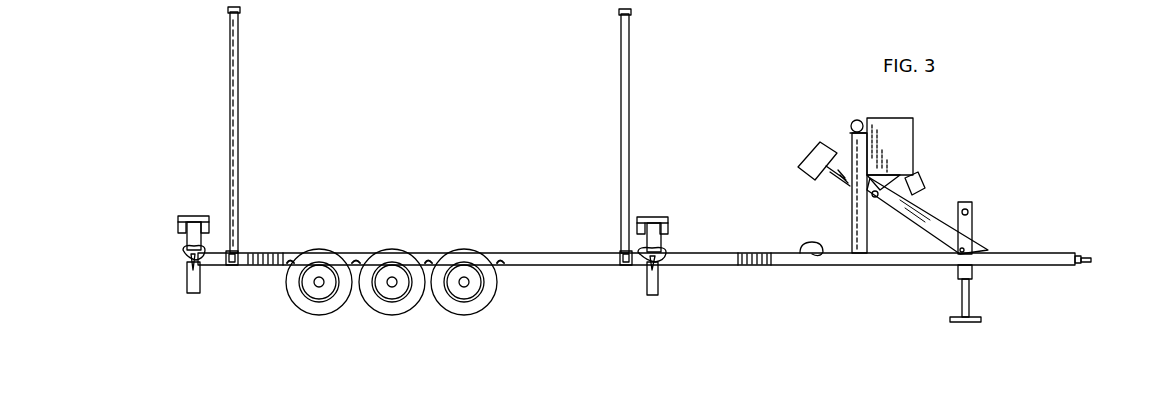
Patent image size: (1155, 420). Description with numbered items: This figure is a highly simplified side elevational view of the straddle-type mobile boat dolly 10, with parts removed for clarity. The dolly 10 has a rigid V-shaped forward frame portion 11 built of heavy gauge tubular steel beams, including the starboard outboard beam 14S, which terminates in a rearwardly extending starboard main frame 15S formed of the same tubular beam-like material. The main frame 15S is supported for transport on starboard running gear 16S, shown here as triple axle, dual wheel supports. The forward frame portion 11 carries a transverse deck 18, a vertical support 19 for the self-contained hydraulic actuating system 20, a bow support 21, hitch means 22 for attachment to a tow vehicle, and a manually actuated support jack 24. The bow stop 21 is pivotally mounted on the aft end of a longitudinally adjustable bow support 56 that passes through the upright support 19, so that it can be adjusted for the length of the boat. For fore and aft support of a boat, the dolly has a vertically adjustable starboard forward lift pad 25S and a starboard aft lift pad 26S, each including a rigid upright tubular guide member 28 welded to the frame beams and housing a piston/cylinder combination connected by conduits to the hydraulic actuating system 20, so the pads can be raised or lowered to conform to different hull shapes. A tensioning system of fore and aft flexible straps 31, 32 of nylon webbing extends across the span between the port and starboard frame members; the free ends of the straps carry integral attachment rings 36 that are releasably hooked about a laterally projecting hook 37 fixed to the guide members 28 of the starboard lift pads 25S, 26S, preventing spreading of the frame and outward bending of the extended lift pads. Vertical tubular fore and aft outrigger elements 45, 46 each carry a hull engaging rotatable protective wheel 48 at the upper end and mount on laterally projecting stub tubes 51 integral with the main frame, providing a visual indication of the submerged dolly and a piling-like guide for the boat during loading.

The boat dolly 10 is at (418, 100).
The forward frame portion 11 is at (988, 240).
The starboard outboard beam 14S is at (742, 266).
The starboard main frame 15S is at (528, 265).
The starboard running gear 16S is at (336, 318).
The transverse deck 18 is at (812, 254).
The vertical support 19 is at (853, 218).
The hydraulic actuating system 20 is at (903, 141).
The bow support 21 is at (810, 158).
The hitch means 22 is at (1094, 262).
The support jack 24 is at (965, 290).
The starboard forward lift pad 25S is at (648, 217).
The starboard aft lift pad 26S is at (193, 216).
The tubular guide member 28 is at (189, 285).
The fore flexible strap 31 is at (656, 242).
The aft flexible strap 32 is at (190, 236).
The attachment ring 36 is at (185, 250).
The hook 37 is at (191, 262).
The fore outrigger element 45 is at (628, 63).
The aft outrigger element 46 is at (237, 62).
The protective wheel 48 is at (241, 10).
The stub tube 51 is at (236, 265).
The bow support 56 is at (920, 216).